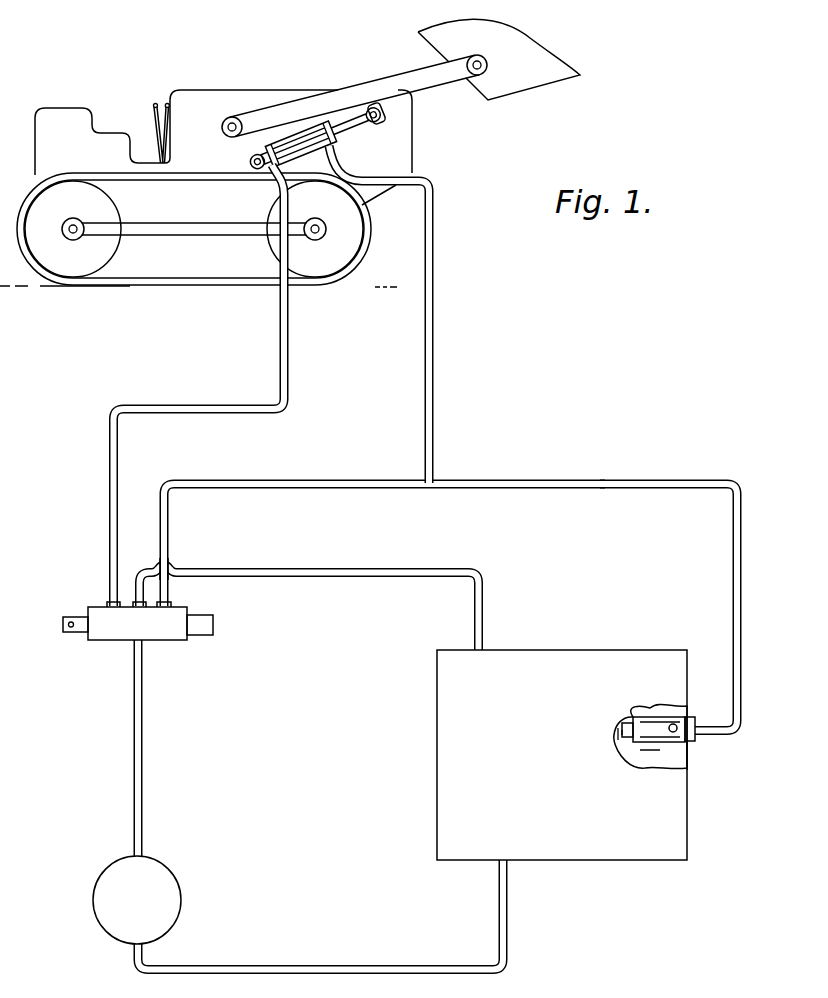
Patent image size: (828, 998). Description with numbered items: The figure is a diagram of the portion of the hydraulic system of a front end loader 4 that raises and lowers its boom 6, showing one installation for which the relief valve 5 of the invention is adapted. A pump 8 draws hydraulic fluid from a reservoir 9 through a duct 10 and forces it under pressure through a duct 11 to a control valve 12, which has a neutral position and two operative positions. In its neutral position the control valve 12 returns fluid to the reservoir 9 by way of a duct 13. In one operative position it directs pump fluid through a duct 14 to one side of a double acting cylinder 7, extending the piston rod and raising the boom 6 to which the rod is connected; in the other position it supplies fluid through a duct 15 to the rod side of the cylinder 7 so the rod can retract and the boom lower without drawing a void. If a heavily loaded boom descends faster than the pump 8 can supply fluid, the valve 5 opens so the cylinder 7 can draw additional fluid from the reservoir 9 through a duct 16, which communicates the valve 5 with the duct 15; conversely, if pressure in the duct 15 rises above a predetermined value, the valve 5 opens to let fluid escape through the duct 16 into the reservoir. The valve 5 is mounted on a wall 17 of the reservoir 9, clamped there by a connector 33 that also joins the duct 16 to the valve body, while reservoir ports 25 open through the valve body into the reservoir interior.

The front end loader 4 is at (216, 98).
The boom 6 is at (376, 86).
The double acting cylinder 7 is at (297, 140).
The relief valve 5 is at (652, 708).
The pump 8 is at (168, 873).
The reservoir 9 is at (559, 655).
The duct 10 is at (356, 945).
The duct 11 is at (144, 756).
The control valve 12 is at (122, 641).
The duct 13 is at (347, 568).
The duct 14 is at (206, 406).
The duct 15 is at (425, 449).
The duct 16 is at (730, 572).
The wall 17 is at (689, 752).
The reservoir ports 25 is at (672, 733).
The connector 33 is at (694, 740).